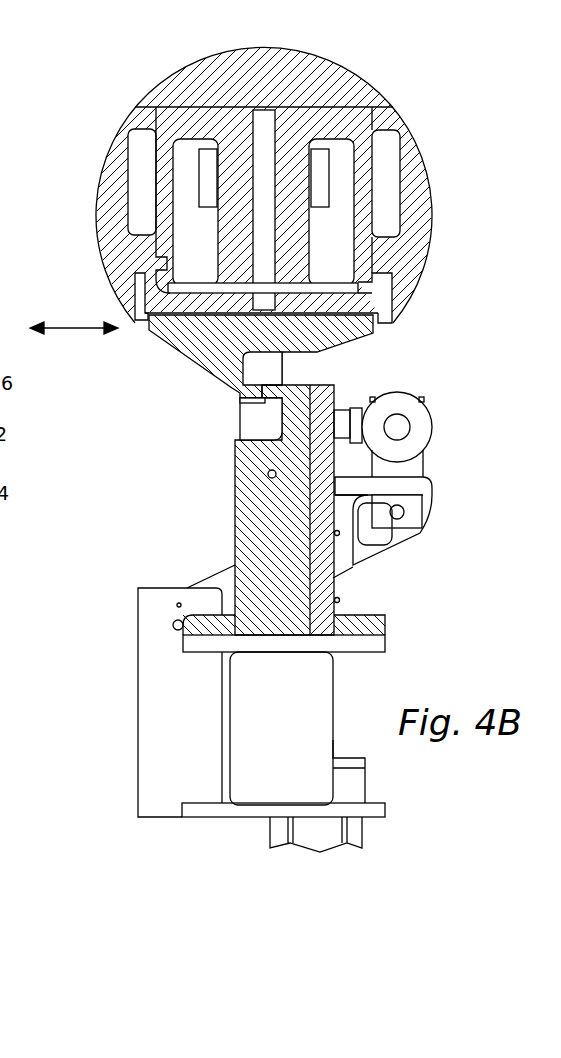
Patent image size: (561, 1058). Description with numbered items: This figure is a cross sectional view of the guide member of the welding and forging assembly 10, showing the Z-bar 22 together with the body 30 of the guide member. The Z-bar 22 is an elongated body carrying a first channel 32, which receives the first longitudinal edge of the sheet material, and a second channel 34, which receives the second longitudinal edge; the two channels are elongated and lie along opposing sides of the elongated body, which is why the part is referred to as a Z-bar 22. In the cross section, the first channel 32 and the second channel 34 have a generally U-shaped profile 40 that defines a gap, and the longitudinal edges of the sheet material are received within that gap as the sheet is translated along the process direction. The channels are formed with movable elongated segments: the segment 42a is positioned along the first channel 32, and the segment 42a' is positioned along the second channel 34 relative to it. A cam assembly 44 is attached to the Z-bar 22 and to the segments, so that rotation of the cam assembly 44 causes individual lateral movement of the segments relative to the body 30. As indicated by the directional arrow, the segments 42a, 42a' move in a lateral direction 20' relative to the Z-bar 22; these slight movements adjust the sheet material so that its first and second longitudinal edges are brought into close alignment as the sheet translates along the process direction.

The assembly 10 is at (458, 108).
The body 30 is at (132, 106).
The lateral direction 20' is at (74, 308).
The first channel 32 is at (313, 358).
The elongated segment 42a is at (322, 373).
The elongated segment 42a' is at (200, 396).
The second channel 34 is at (235, 420).
The U-shaped profile 40 is at (278, 425).
The Z-bar 22 is at (355, 425).
The cam assembly 44 is at (432, 490).